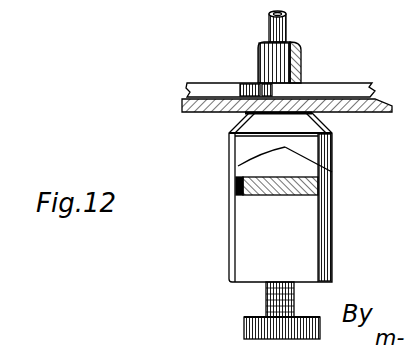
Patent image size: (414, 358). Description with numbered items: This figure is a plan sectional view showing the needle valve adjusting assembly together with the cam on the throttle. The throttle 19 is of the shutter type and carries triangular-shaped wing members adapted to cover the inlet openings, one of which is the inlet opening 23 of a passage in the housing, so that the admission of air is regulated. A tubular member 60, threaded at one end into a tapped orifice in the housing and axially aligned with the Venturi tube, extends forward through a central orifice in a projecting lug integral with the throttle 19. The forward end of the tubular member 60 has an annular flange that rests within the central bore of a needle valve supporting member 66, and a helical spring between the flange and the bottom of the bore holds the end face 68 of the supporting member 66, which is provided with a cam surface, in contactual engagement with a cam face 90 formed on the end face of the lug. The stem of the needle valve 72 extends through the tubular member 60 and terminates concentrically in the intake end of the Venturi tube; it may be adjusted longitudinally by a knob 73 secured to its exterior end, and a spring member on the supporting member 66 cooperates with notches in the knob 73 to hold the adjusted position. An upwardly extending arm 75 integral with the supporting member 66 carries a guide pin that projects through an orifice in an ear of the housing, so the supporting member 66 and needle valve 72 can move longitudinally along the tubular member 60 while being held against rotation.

The throttle 19 is at (363, 111).
The inlet opening 23 is at (232, 70).
The tubular member 60 is at (318, 56).
The needle valve supporting member 66 is at (250, 226).
The end face 68 is at (276, 148).
The needle valve 72 is at (266, 22).
The knob 73 is at (260, 328).
The upwardly extending arm 75 is at (322, 178).
The cam face 90 is at (276, 150).